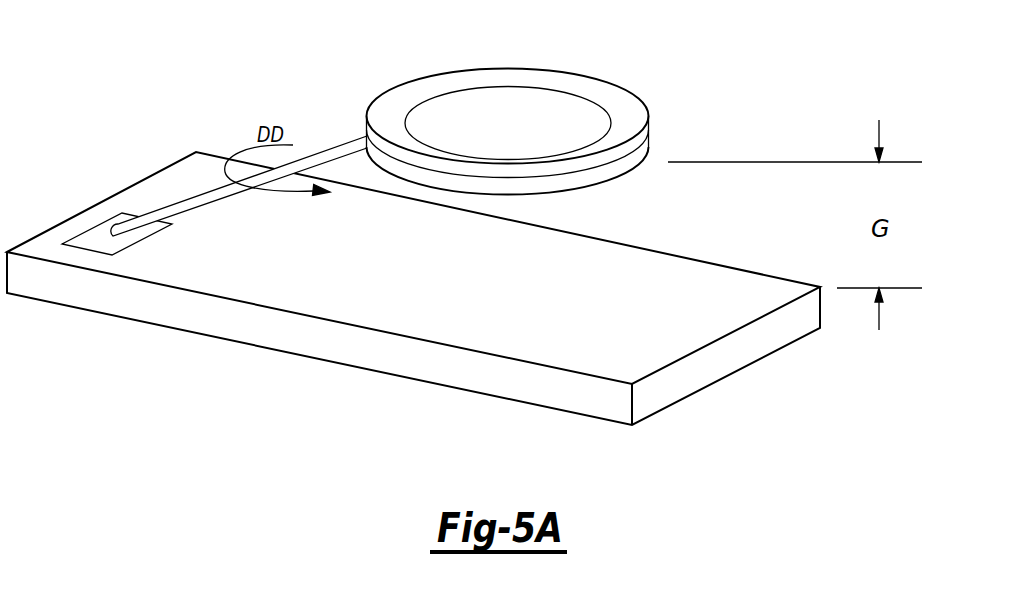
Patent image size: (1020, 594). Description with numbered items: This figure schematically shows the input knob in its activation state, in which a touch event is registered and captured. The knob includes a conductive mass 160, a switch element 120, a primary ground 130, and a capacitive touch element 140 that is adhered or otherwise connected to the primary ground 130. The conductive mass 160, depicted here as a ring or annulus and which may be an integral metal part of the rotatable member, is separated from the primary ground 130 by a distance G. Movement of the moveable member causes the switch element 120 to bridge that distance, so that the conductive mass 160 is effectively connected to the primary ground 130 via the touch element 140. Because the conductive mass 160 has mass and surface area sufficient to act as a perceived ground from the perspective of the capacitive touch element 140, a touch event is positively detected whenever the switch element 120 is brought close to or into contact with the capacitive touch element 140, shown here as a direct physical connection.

The switch element 120 is at (200, 200).
The primary ground 130 is at (61, 284).
The capacitive touch element 140 is at (83, 242).
The conductive mass 160 is at (626, 62).